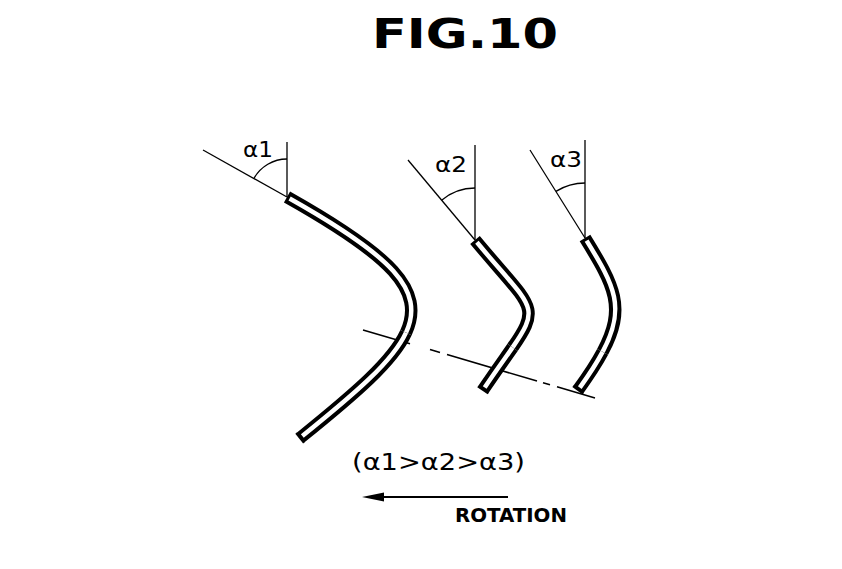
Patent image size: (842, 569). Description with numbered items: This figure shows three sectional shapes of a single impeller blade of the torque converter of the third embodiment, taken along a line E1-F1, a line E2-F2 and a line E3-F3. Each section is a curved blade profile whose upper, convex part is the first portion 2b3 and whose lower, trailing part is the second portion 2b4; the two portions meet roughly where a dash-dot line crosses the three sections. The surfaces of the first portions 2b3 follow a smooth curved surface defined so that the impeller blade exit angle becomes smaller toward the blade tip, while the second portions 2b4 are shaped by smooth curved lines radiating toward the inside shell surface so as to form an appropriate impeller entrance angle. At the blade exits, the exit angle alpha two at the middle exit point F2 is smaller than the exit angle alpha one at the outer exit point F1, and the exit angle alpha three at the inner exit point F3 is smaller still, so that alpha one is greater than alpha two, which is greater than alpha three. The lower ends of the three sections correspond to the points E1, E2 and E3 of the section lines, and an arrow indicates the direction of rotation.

The first portion 2b3 is at (378, 254).
The second portion 2b4 is at (330, 412).
The outer exit point F1 is at (245, 184).
The middle exit point F2 is at (441, 202).
The inner exit point F3 is at (555, 200).
The section line end point E1 is at (277, 451).
The section line end point E2 is at (476, 412).
The section line end point E3 is at (561, 411).